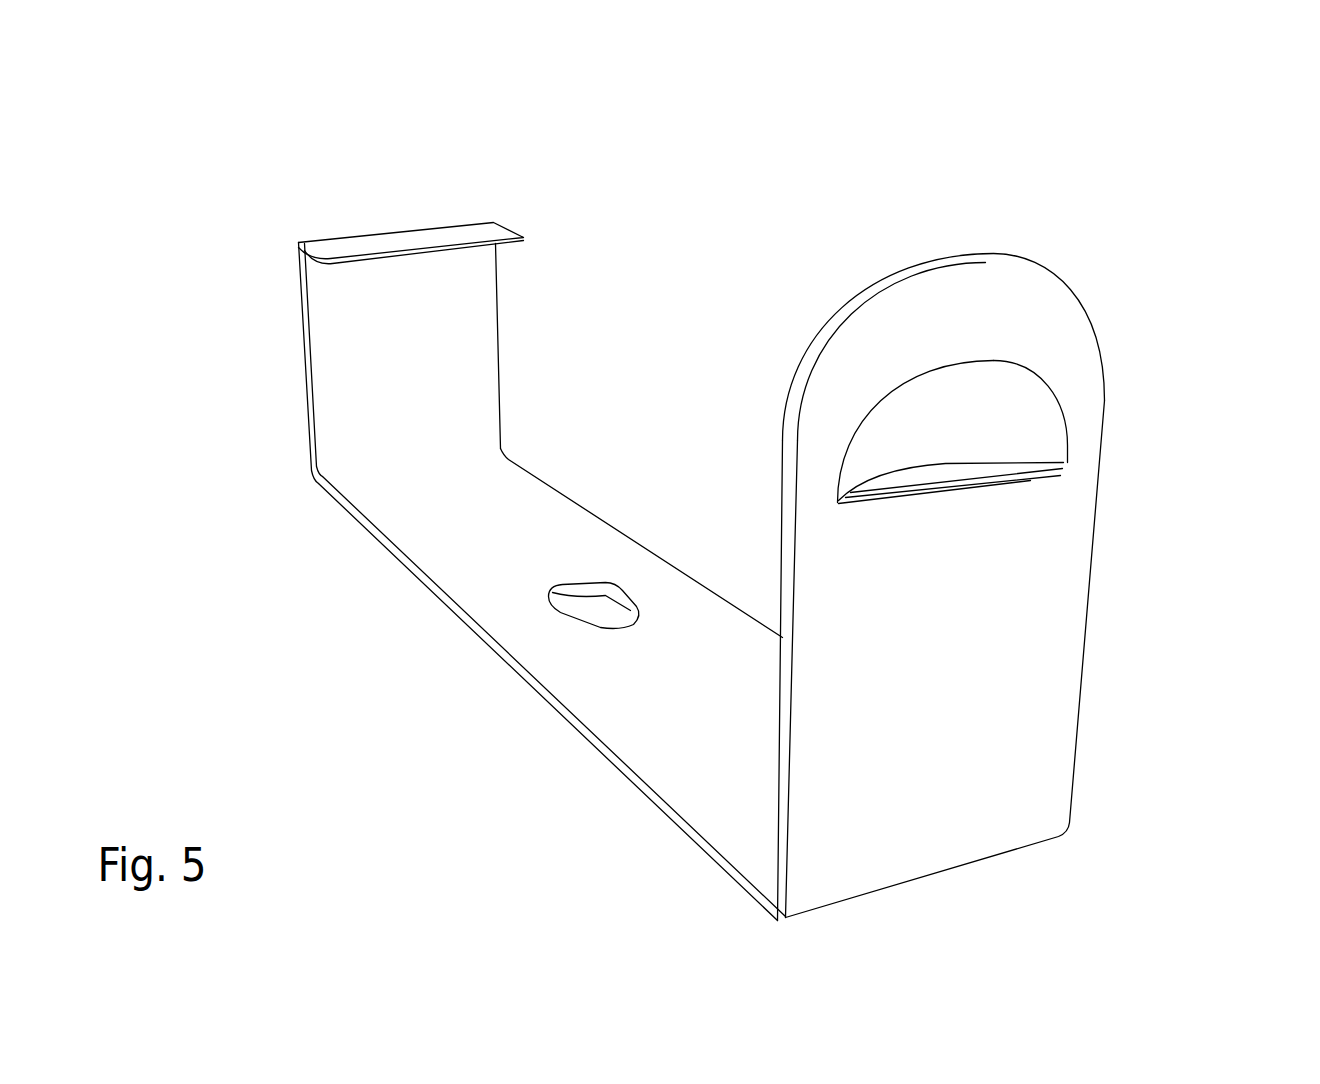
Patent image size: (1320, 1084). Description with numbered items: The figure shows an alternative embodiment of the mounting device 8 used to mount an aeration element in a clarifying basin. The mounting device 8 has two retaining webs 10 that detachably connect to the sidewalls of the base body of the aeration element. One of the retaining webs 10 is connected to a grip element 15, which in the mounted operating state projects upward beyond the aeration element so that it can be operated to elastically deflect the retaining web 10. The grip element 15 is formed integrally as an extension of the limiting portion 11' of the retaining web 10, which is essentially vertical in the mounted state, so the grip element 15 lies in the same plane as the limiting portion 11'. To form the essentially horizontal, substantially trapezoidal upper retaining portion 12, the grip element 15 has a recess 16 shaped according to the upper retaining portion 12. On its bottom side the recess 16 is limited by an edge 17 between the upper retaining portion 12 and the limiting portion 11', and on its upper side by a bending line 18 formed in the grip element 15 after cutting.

The mounting device 8 is at (648, 217).
The retaining web 10 is at (352, 367).
The limiting portion 11' is at (1041, 561).
The upper retaining portion 12 is at (380, 240).
The grip element 15 is at (1030, 300).
The recess 16 is at (1018, 429).
The edge 17 is at (973, 478).
The bending line 18 is at (1037, 375).